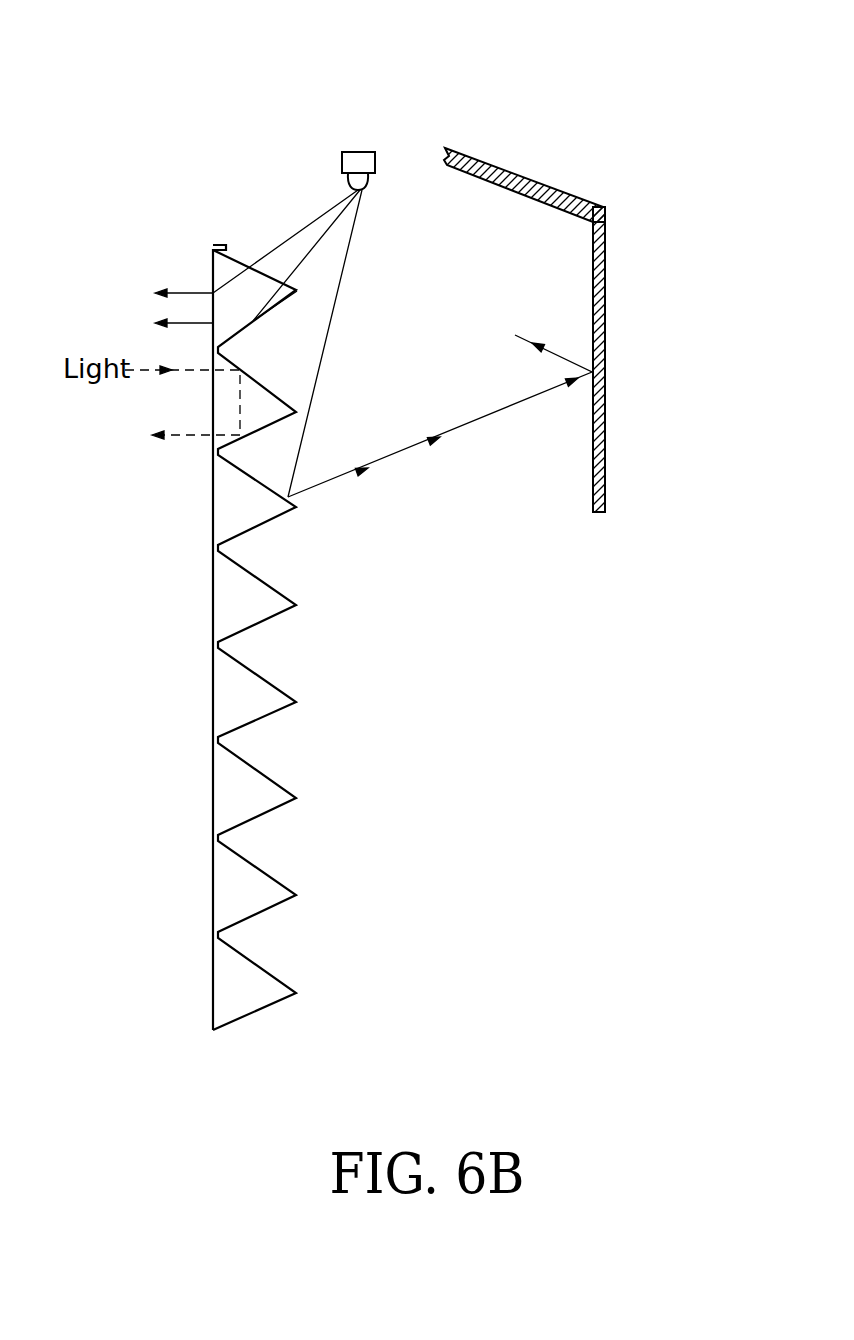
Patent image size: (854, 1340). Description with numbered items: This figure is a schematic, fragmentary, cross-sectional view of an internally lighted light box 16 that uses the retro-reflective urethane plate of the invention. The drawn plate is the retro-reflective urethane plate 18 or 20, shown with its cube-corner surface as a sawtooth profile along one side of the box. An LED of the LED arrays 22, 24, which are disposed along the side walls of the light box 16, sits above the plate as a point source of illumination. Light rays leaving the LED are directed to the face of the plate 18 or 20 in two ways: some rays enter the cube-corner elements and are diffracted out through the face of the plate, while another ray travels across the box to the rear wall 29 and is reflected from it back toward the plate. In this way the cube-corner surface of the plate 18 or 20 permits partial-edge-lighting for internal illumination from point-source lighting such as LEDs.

The LED array 22 is at (368, 100).
The LED array 24 is at (358, 162).
The light box 16 is at (601, 330).
The rear wall 29 is at (605, 422).
The retro-reflective urethane plate 20 is at (184, 637).
The retro-reflective urethane plate 18 is at (213, 787).